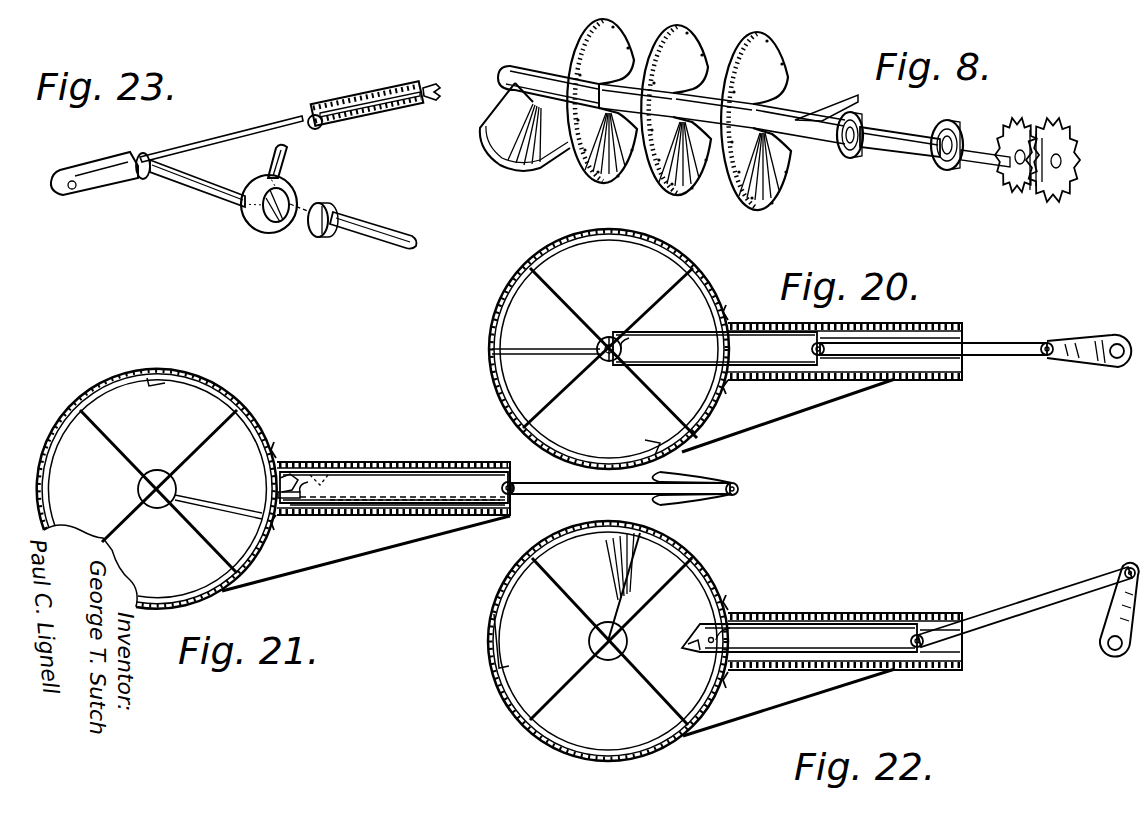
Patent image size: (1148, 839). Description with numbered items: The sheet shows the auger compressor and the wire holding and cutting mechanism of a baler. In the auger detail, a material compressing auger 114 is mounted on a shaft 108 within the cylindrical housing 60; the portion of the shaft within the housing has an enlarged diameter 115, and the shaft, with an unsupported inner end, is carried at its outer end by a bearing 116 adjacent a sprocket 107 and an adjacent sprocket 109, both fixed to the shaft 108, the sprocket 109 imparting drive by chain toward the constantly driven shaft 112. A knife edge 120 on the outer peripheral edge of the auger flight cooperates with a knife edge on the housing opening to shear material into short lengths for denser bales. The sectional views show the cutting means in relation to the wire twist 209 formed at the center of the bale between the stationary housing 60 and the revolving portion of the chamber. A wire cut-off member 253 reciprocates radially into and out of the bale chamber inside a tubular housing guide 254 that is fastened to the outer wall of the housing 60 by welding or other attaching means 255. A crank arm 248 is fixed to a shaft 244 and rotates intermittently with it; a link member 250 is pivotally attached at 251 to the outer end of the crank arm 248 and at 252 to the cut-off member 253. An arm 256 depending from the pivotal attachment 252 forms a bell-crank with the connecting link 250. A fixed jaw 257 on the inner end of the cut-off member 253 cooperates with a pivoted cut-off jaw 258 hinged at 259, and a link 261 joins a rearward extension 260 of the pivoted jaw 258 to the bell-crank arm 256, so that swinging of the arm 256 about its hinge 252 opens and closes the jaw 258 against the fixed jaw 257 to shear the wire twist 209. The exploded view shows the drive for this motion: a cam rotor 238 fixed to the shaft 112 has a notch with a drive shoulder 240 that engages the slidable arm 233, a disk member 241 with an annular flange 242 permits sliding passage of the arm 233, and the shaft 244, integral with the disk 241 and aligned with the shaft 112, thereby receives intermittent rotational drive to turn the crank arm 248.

In FIG. 20, the housing 60 is at (479, 347).
In FIG. 21, the housing 60 is at (40, 419).
In FIG. 22, the housing 60 is at (499, 714).
In FIG. 8, the sprocket 107 is at (1078, 140).
In FIG. 8, the shaft 108 is at (978, 140).
In FIG. 8, the sprocket 109 is at (1025, 117).
In FIG. 23, the shaft 112 is at (390, 232).
In FIG. 8, the material compressing auger 114 is at (673, 114).
In FIG. 8, the enlarged diameter shaft portion 115 is at (914, 148).
In FIG. 8, the bearing 116 is at (868, 120).
In FIG. 8, the knife edge 120 is at (575, 158).
In FIG. 20, the wire twist 209 is at (598, 346).
In FIG. 21, the wire twist 209 is at (138, 491).
In FIG. 22, the wire twist 209 is at (607, 652).
In FIG. 23, the slidable arm 233 is at (272, 145).
In FIG. 23, the cam rotor 238 is at (326, 236).
In FIG. 23, the drive shoulder 240 is at (322, 198).
In FIG. 23, the disk member 241 is at (236, 201).
In FIG. 23, the annular flange 242 is at (239, 225).
In FIG. 23, the shaft 244 is at (188, 185).
In FIG. 20, the shaft 244 is at (1118, 359).
In FIG. 22, the shaft 244 is at (1113, 650).
In FIG. 23, the crank arm 248 is at (100, 182).
In FIG. 20, the crank arm 248 is at (1082, 359).
In FIG. 21, the crank arm 248 is at (700, 478).
In FIG. 22, the crank arm 248 is at (1110, 620).
In FIG. 23, the link member 250 is at (230, 133).
In FIG. 20, the link member 250 is at (995, 342).
In FIG. 21, the link member 250 is at (552, 494).
In FIG. 22, the link member 250 is at (1008, 604).
In FIG. 20, the pivotal attachment 251 is at (1052, 344).
In FIG. 22, the pivotal attachment 251 is at (1128, 568).
In FIG. 20, the pivotal attachment 252 is at (824, 345).
In FIG. 21, the pivotal attachment 252 is at (505, 498).
In FIG. 22, the pivotal attachment 252 is at (917, 650).
In FIG. 20, the wire cut-off member 253 is at (757, 346).
In FIG. 21, the wire cut-off member 253 is at (405, 480).
In FIG. 22, the wire cut-off member 253 is at (843, 632).
In FIG. 20, the tubular housing guide 254 is at (930, 324).
In FIG. 21, the tubular housing guide 254 is at (478, 455).
In FIG. 22, the tubular housing guide 254 is at (892, 614).
In FIG. 20, the attaching means 255 is at (728, 318).
In FIG. 21, the attaching means 255 is at (277, 455).
In FIG. 22, the attaching means 255 is at (728, 608).
In FIG. 23, the arm 256 is at (320, 128).
In FIG. 21, the arm 256 is at (478, 518).
In FIG. 23, the fixed jaw 257 is at (379, 94).
In FIG. 20, the fixed jaw 257 is at (609, 362).
In FIG. 21, the fixed jaw 257 is at (290, 500).
In FIG. 22, the fixed jaw 257 is at (695, 652).
In FIG. 23, the pivoted cut-off jaw 258 is at (432, 84).
In FIG. 20, the pivoted cut-off jaw 258 is at (609, 344).
In FIG. 21, the pivoted cut-off jaw 258 is at (290, 478).
In FIG. 22, the pivoted cut-off jaw 258 is at (706, 638).
In FIG. 20, the hinge 259 is at (629, 341).
In FIG. 21, the hinge 259 is at (303, 488).
In FIG. 22, the hinge 259 is at (725, 632).
In FIG. 21, the rearward extension 260 is at (338, 470).
In FIG. 23, the link 261 is at (372, 104).
In FIG. 21, the link 261 is at (371, 505).